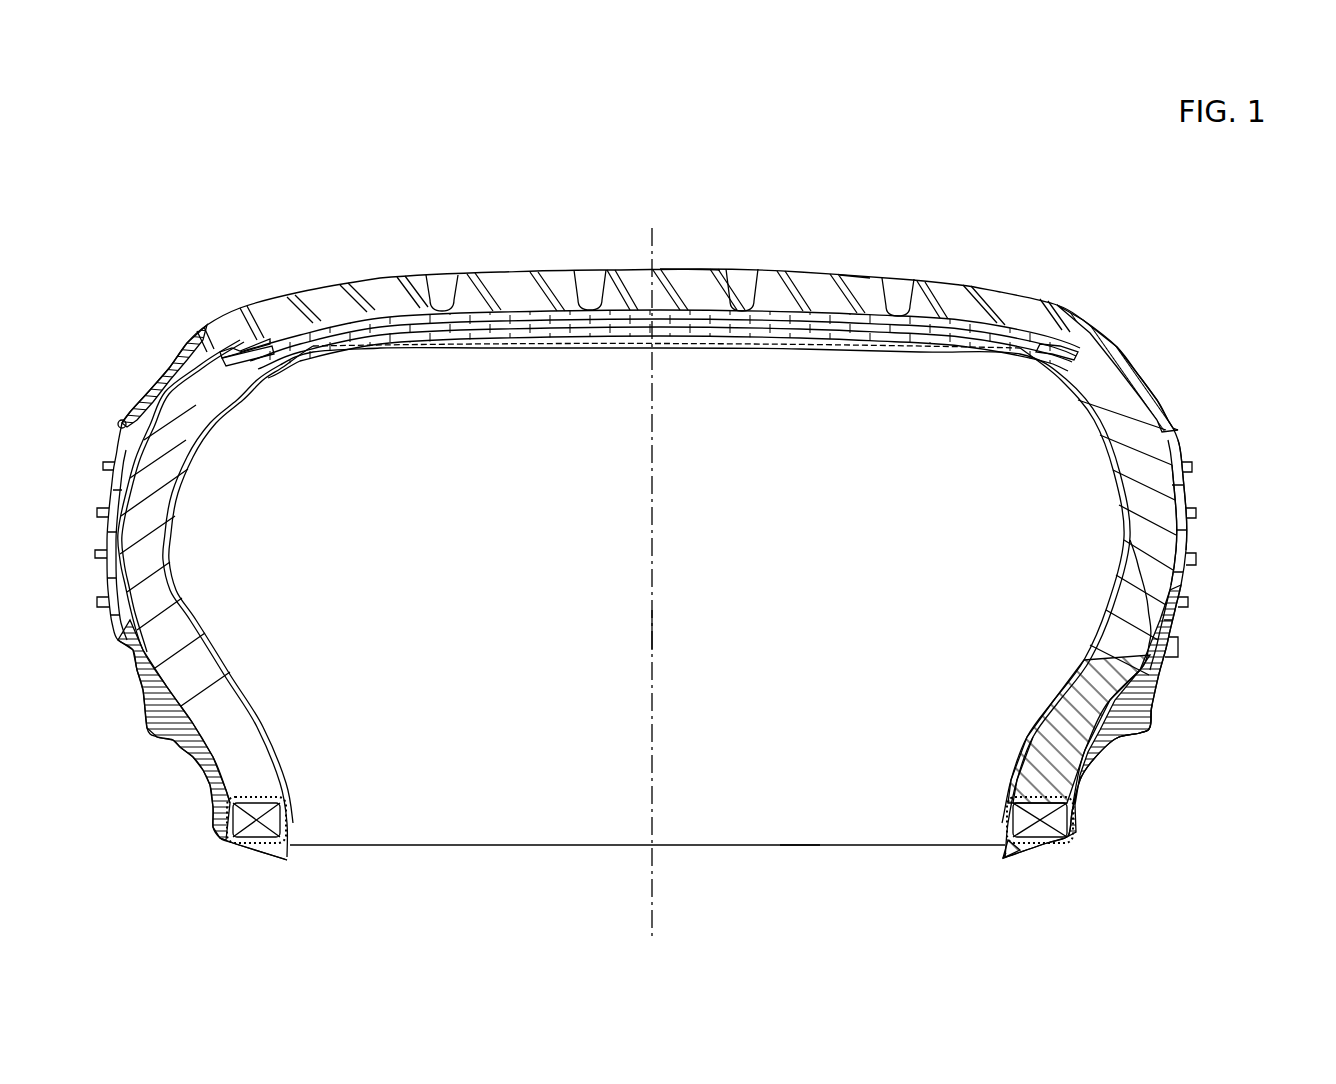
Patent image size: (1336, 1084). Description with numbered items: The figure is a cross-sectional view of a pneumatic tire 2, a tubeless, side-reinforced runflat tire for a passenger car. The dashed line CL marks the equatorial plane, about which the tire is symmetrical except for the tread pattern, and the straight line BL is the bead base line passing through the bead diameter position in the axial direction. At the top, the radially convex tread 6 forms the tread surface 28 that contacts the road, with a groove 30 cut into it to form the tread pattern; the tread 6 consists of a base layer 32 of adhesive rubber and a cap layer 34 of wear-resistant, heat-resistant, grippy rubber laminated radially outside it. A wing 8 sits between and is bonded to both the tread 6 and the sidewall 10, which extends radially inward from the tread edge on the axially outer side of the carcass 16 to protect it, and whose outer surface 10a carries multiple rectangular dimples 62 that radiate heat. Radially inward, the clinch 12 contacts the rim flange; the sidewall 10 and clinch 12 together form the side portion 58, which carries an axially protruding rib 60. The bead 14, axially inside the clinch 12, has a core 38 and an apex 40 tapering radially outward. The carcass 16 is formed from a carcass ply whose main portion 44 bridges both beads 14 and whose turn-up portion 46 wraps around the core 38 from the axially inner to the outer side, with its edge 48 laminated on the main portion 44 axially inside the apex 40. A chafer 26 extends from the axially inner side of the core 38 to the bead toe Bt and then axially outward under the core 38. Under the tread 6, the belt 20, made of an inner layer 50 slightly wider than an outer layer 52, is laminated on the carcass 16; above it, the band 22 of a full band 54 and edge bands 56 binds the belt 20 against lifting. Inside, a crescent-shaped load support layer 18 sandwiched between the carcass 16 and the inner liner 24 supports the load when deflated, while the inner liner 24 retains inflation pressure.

The pneumatic tire 2 is at (130, 250).
The tread 6 is at (633, 254).
The wing 8 is at (1137, 373).
The sidewall 10 is at (1190, 534).
The outer surface of sidewall 10a is at (1186, 470).
The clinch 12 is at (690, 712).
The bead 14 is at (732, 804).
The carcass 16 is at (1150, 515).
The load support layer 18 is at (168, 478).
The belt 20 is at (660, 382).
The band 22 is at (649, 272).
The inner liner 24 is at (1093, 650).
The chafer 26 is at (1003, 850).
The tread surface 28 is at (688, 272).
The groove 30 is at (742, 275).
The base layer 32 is at (818, 313).
The cap layer 34 is at (862, 285).
The core 38 is at (1052, 820).
The apex 40 is at (1087, 742).
The main portion 44 is at (1015, 771).
The turn-up portion 46 is at (1037, 760).
The edge 48 is at (1040, 727).
The inner layer 50 is at (431, 345).
The outer layer 52 is at (400, 406).
The full band 54 is at (312, 333).
The edge band 56 is at (262, 340).
The side portion 58 is at (705, 630).
The rib 60 is at (1148, 735).
The dimple 62 is at (1182, 452).
The bead toe Bt is at (1003, 862).
The bead base line BL is at (798, 843).
The equatorial plane CL is at (660, 632).